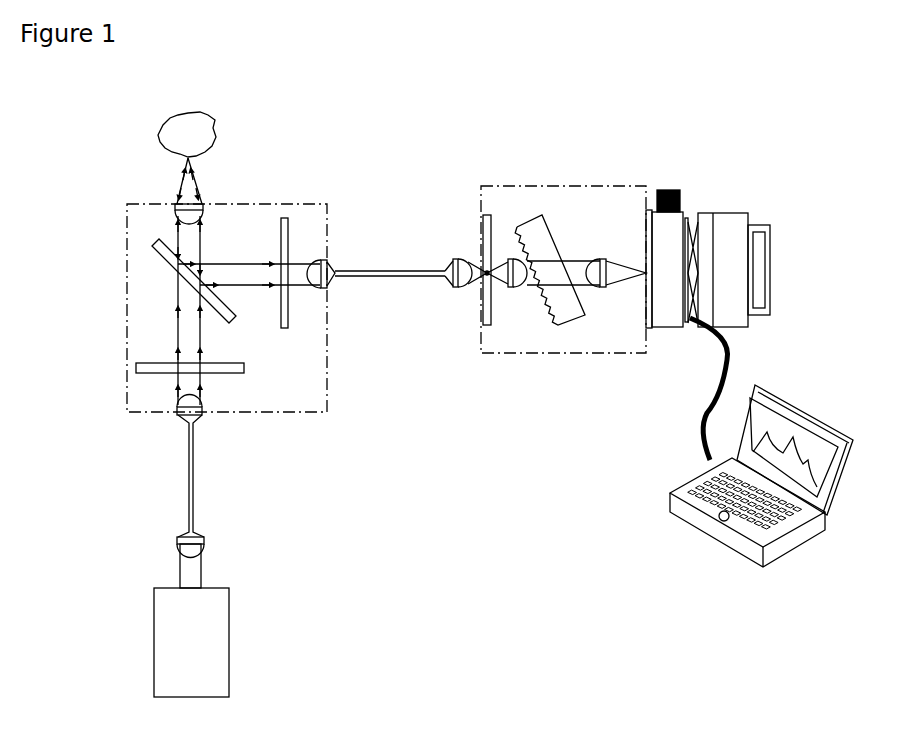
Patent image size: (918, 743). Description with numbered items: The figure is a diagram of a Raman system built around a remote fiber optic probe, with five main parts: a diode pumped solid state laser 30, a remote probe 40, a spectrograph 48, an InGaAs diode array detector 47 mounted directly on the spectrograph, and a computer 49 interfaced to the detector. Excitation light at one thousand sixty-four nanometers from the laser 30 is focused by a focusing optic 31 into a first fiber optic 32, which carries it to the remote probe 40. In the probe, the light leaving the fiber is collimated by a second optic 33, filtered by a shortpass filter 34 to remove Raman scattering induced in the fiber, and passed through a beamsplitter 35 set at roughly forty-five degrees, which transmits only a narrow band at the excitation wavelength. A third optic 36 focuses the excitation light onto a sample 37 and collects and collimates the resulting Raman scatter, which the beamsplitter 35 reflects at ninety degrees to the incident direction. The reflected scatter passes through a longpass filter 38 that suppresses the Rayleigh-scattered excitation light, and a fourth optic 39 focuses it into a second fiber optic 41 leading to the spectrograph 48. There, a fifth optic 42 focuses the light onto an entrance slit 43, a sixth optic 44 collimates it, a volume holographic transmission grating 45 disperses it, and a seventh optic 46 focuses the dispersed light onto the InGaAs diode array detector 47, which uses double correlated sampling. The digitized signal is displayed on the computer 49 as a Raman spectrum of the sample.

The diode pumped solid state laser 30 is at (229, 665).
The focusing optic 31 is at (204, 541).
The first fiber optic 32 is at (193, 473).
The second optic 33 is at (202, 413).
The shortpass filter 34 is at (228, 373).
The beamsplitter 35 is at (153, 255).
The third optic 36 is at (175, 209).
The sample 37 is at (158, 140).
The longpass filter 38 is at (287, 218).
The fourth optic 39 is at (326, 260).
The remote probe 40 is at (329, 414).
The second fiber optic 41 is at (392, 270).
The fifth optic 42 is at (458, 258).
The entrance slit 43 is at (483, 325).
The sixth optic 44 is at (511, 287).
The volume holographic transmission grating 45 is at (557, 325).
The seventh optic 46 is at (603, 287).
The InGaAs diode array detector 47 is at (665, 328).
The spectrograph 48 is at (535, 197).
The computer 49 is at (676, 523).